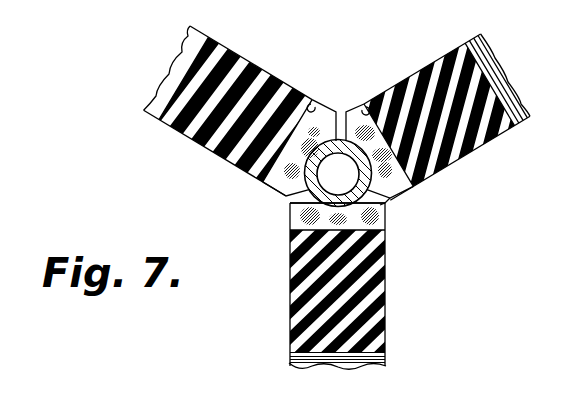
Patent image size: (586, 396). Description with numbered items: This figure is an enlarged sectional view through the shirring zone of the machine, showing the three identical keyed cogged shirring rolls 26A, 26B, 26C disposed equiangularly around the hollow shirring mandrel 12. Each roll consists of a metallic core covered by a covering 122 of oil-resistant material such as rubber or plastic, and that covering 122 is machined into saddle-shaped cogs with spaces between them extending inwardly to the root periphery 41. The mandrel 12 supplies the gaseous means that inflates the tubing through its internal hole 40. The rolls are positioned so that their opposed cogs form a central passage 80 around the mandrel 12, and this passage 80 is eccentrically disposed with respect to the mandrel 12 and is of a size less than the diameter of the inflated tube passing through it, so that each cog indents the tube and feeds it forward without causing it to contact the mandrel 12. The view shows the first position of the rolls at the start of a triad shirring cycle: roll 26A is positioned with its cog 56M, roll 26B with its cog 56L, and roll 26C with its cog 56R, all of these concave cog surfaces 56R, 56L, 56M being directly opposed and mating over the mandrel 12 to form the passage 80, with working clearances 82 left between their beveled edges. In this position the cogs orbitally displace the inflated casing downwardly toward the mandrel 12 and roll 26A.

The covering 122 is at (240, 64).
The shirring roll 26A is at (393, 334).
The shirring roll 26B is at (495, 145).
The shirring roll 26C is at (197, 149).
The mandrel 12 is at (336, 146).
The internal hole 40 is at (347, 146).
The root periphery 41 is at (322, 103).
The concave cog surface 56R is at (268, 189).
The concave cog surface 56L is at (394, 184).
The concave cog surface 56M is at (298, 226).
The operating clearance 82 is at (296, 206).
The passage 80 is at (388, 206).